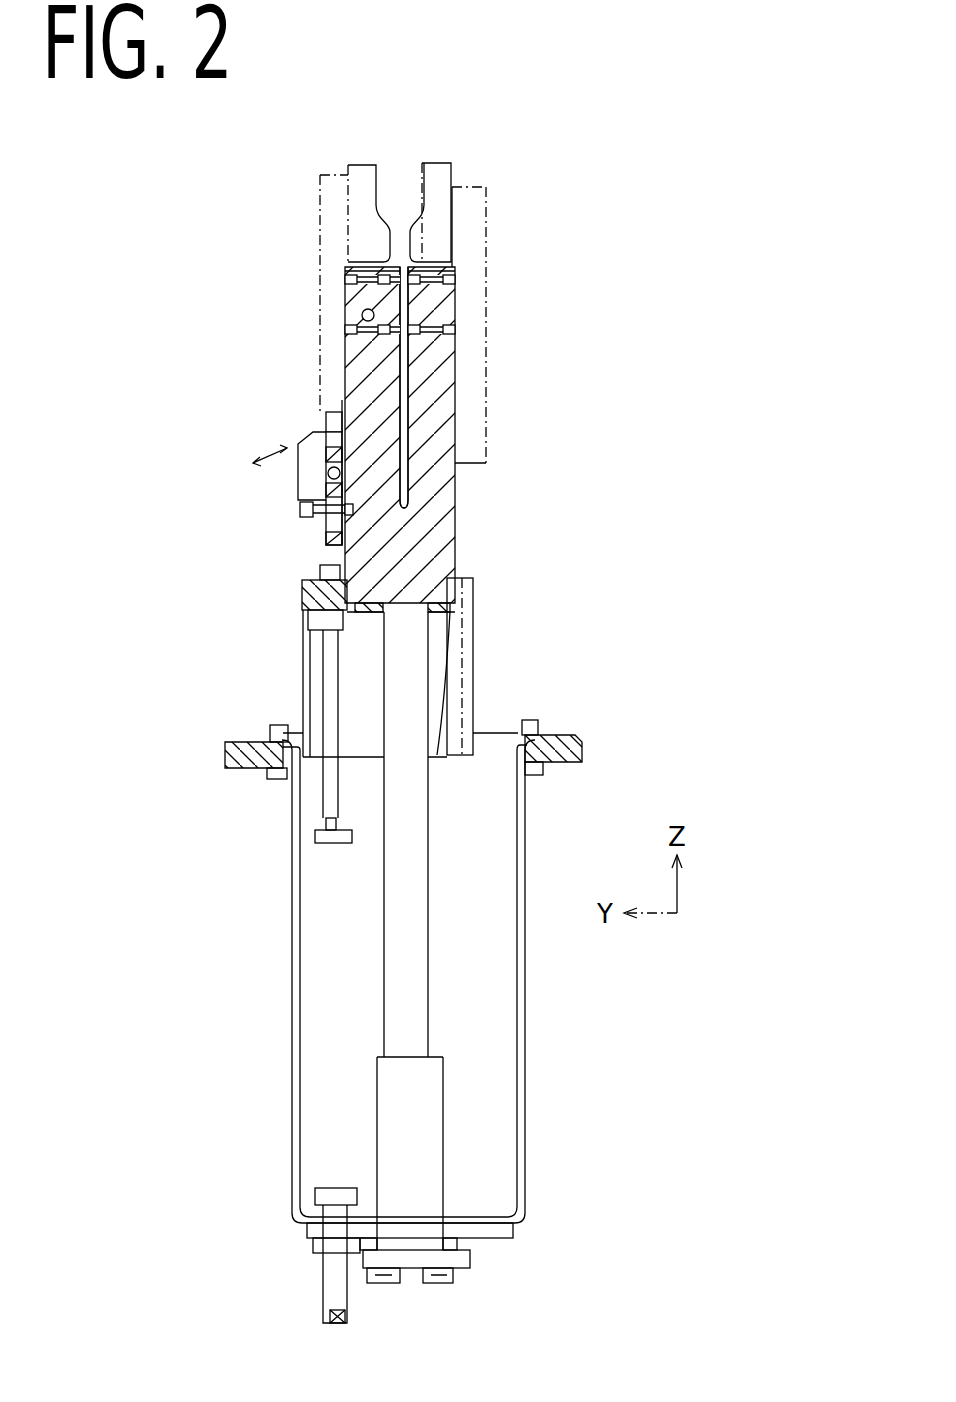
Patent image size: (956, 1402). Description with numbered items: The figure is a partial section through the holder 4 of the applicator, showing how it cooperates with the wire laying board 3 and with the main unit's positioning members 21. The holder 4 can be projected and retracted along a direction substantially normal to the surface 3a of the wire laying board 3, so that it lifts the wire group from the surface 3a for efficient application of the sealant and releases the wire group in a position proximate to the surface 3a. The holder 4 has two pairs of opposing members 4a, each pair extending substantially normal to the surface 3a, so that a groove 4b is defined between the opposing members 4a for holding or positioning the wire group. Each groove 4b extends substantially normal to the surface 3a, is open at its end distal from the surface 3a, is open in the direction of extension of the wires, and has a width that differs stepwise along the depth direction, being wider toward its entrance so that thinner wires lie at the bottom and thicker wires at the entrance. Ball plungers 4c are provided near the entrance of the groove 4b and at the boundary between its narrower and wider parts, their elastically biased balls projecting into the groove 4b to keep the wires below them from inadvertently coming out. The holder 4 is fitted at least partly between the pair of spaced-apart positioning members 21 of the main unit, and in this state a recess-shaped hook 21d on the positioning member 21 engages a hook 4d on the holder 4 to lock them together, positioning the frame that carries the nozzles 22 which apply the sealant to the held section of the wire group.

The wire laying board 3 is at (553, 765).
The surface 3a is at (563, 737).
The holder 4 is at (503, 560).
The opposing members 4a is at (357, 373).
The groove 4b is at (408, 428).
The ball plungers 4c is at (345, 331).
The hook 4d is at (320, 430).
The positioning members 21 is at (320, 247).
The recess-shaped hook 21d is at (303, 470).
The nozzles 22 is at (360, 165).